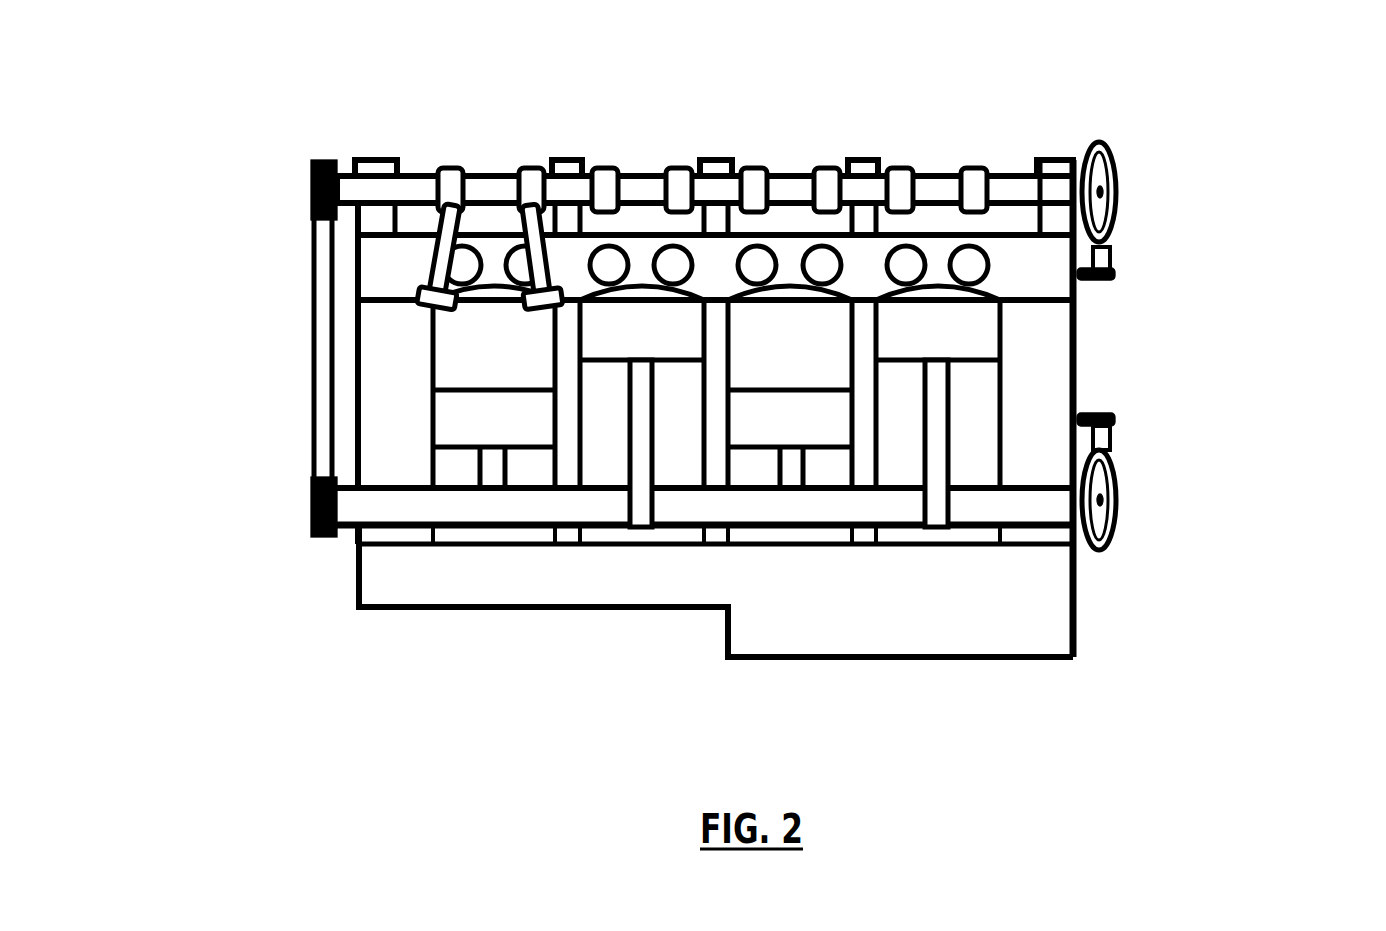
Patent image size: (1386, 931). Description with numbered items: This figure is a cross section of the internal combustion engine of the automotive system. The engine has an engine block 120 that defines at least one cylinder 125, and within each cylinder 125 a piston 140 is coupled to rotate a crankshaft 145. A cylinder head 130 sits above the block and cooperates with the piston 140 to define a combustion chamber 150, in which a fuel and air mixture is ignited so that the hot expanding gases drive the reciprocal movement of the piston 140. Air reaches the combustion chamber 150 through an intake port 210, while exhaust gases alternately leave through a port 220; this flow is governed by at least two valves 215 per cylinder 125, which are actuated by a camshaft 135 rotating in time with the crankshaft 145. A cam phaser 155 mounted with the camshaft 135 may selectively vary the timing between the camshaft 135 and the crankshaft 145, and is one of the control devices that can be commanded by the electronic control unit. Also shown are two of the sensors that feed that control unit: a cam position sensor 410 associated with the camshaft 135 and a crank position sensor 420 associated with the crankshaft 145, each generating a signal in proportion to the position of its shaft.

The engine block 120 is at (357, 390).
The cylinder 125 is at (732, 357).
The cylinder head 130 is at (352, 285).
The camshaft 135 is at (482, 175).
The piston 140 is at (797, 415).
The crankshaft 145 is at (420, 515).
The combustion chamber 150 is at (938, 293).
The cam phaser 155 is at (309, 186).
The intake port 210 is at (770, 247).
The valves 215 is at (445, 273).
The exhaust port 220 is at (657, 243).
The cam position sensor 410 is at (1115, 270).
The crank position sensor 420 is at (1115, 425).